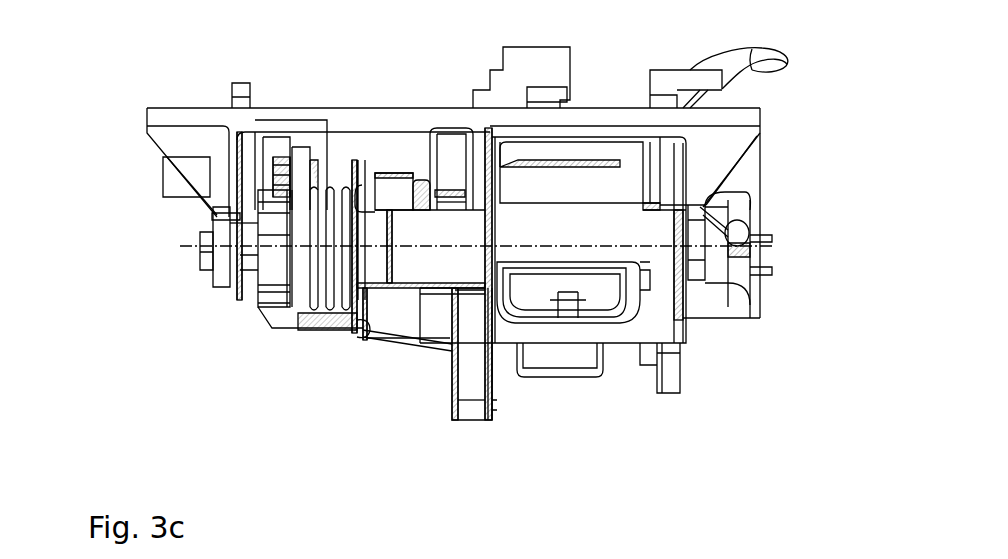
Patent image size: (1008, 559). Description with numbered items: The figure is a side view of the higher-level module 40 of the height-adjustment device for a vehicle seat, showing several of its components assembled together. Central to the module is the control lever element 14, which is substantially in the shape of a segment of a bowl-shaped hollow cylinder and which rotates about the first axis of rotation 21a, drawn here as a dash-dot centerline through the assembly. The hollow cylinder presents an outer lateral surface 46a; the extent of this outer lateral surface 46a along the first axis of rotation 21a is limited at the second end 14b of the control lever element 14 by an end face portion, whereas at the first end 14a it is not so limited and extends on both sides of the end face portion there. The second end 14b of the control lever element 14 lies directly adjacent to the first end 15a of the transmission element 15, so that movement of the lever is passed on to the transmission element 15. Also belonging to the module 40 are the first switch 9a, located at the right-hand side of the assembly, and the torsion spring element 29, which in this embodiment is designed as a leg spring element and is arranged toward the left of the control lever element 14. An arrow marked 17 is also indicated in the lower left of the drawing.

The higher-level module 40 is at (128, 66).
The torsion spring element 29 is at (326, 197).
The second end of the control lever element 14b is at (484, 248).
The outer lateral surface 46a is at (622, 200).
The first switch 9a is at (745, 262).
The first axis of rotation 21a is at (190, 250).
The transmission element 15 is at (462, 388).
The first end of the transmission element 15a is at (500, 399).
The control lever element 14 is at (632, 328).
The first end of the control lever element 14a is at (692, 336).
The direction arrow 17 is at (240, 411).